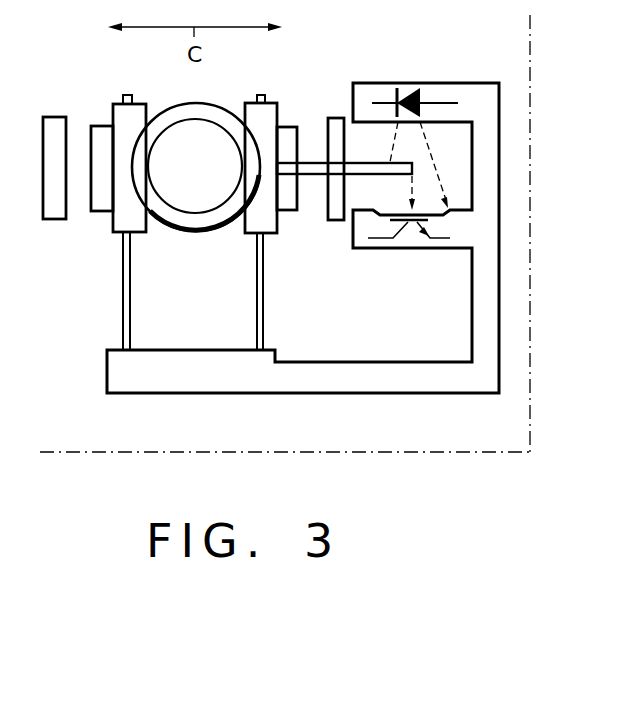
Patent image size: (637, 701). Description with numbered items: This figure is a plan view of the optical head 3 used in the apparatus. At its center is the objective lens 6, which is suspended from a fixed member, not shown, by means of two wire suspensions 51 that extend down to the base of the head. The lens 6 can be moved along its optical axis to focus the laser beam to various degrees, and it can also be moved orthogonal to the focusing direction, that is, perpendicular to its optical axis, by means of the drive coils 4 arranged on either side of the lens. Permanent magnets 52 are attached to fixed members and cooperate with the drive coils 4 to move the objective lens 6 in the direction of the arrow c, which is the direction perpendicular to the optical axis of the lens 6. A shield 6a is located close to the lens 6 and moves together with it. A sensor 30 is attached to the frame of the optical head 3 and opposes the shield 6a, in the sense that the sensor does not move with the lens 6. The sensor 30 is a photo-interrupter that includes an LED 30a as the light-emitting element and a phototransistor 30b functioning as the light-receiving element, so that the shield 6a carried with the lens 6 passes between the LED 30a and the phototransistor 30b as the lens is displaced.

The optical head 3 is at (530, 300).
The drive coils 4 is at (93, 125).
The objective lens 6 is at (193, 202).
The shield 6a is at (363, 175).
The sensor 30 is at (388, 72).
The LED 30a is at (415, 82).
The phototransistor 30b is at (412, 244).
The wire suspensions 51 is at (122, 310).
The permanent magnets 52 is at (55, 219).